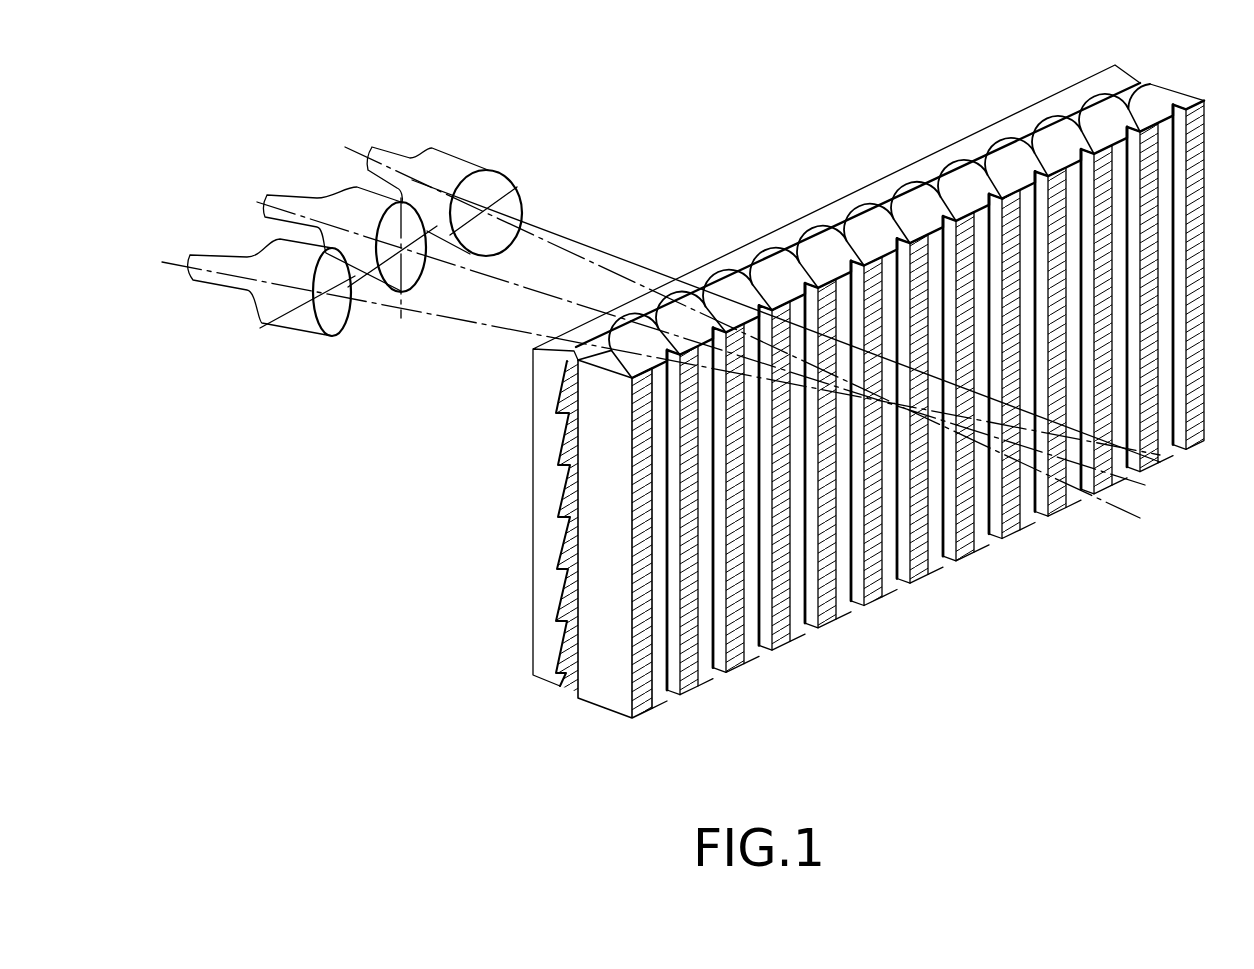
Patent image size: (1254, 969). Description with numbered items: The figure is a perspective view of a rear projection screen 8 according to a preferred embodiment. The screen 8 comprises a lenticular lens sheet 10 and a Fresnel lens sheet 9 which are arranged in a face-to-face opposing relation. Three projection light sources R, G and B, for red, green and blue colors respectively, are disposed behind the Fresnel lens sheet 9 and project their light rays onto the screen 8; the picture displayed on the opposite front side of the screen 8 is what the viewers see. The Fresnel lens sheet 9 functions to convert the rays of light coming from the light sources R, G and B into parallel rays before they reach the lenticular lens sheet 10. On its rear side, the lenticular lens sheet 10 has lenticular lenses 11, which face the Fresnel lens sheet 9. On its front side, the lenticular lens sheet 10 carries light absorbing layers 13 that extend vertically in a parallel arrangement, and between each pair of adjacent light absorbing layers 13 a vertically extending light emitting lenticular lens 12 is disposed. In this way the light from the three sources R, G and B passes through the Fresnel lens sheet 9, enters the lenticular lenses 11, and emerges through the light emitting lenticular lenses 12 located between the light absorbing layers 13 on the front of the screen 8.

The projection light source B is at (211, 254).
The projection light source G is at (293, 192).
The projection light source R is at (389, 146).
The rear projection screen 8 is at (835, 410).
The Fresnel lens sheet 9 is at (545, 657).
The lenticular lens sheet 10 is at (888, 445).
The lenticular lenses 11 is at (806, 250).
The light emitting lenticular lens 12 is at (1025, 503).
The light absorbing layers 13 is at (918, 568).